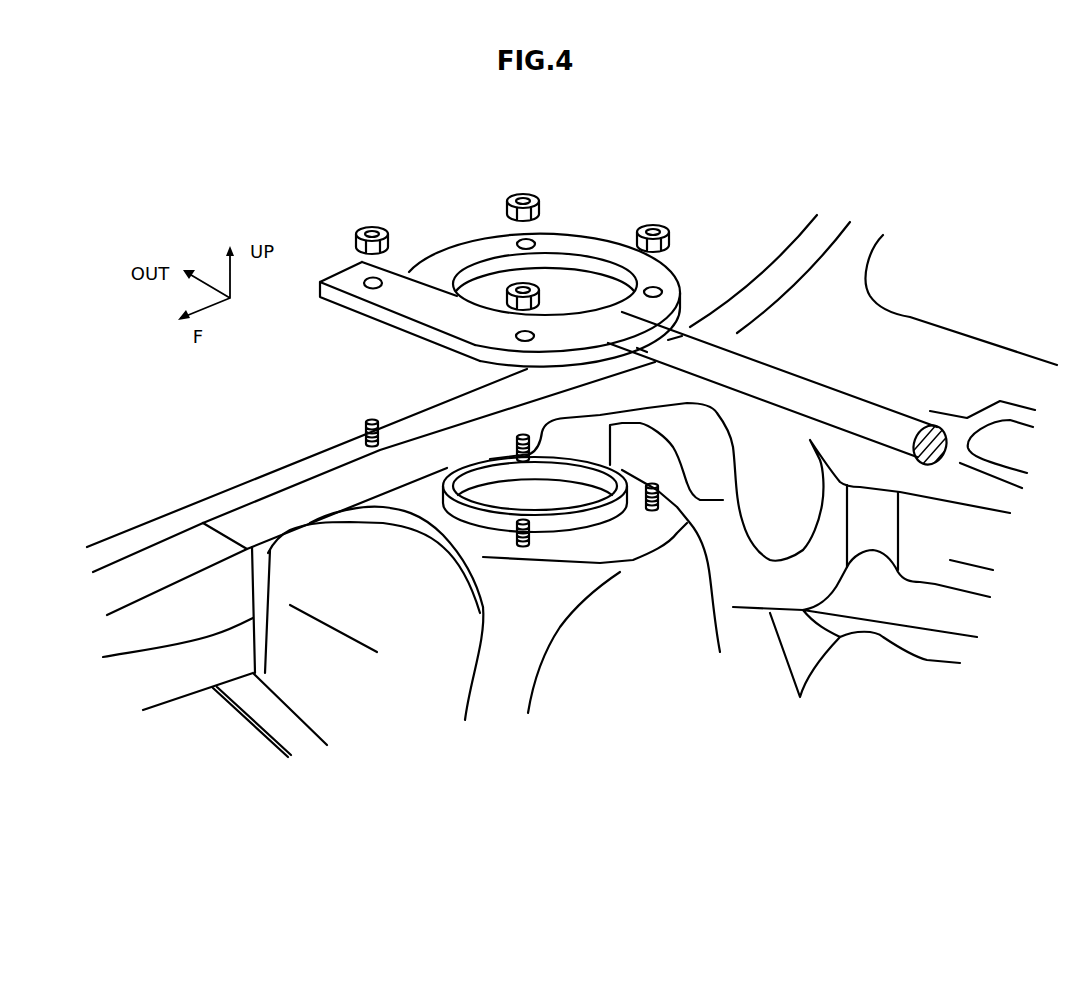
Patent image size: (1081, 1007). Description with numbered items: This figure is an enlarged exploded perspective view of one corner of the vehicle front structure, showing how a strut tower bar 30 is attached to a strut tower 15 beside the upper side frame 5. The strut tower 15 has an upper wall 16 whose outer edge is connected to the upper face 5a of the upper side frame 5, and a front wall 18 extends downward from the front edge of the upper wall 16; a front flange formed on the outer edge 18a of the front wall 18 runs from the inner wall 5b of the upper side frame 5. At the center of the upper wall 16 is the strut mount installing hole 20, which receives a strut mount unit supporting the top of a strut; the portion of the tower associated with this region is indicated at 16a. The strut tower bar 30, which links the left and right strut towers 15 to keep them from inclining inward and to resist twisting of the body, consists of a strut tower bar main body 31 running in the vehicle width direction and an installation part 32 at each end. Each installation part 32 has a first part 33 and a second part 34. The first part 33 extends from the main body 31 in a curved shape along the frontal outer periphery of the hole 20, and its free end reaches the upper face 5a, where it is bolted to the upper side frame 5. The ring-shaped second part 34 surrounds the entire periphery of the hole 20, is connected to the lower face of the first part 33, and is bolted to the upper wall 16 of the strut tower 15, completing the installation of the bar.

The upper side frame 5 is at (307, 492).
The upper face of the upper side frame 5a is at (210, 500).
The inner wall of the upper side frame 5b is at (230, 578).
The strut tower 15 is at (571, 658).
The upper wall 16 is at (642, 538).
The flange of floor panel 16a is at (308, 492).
The front wall 18 is at (268, 667).
The outer edge of the front wall 18a is at (153, 645).
The strut mount installing hole 20 is at (497, 478).
The strut tower bar 30 is at (832, 310).
The strut tower bar main body 31 is at (849, 392).
The installation part 32 is at (500, 241).
The first part 33 is at (393, 267).
The second part 34 is at (600, 243).